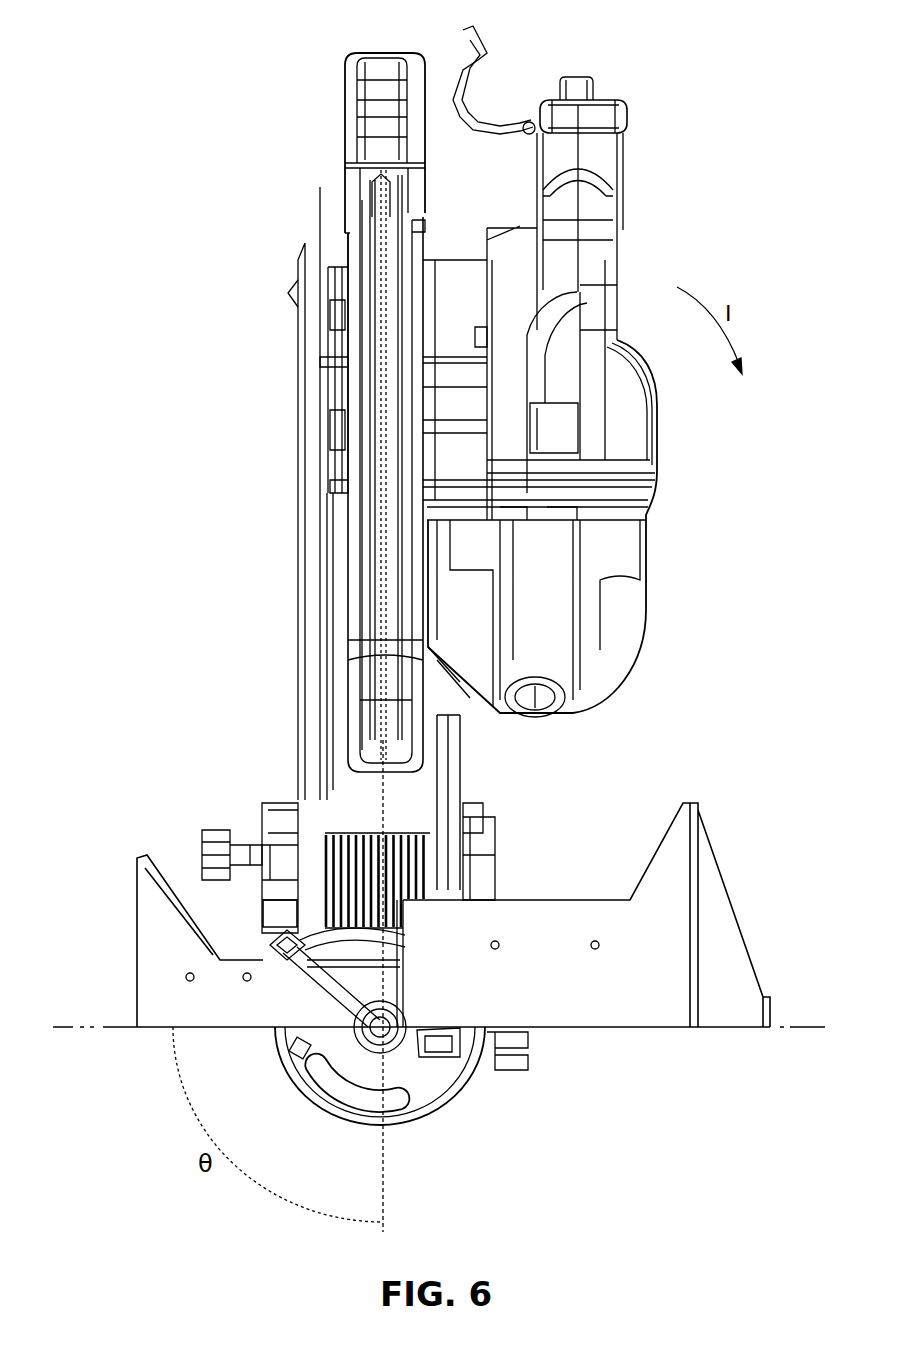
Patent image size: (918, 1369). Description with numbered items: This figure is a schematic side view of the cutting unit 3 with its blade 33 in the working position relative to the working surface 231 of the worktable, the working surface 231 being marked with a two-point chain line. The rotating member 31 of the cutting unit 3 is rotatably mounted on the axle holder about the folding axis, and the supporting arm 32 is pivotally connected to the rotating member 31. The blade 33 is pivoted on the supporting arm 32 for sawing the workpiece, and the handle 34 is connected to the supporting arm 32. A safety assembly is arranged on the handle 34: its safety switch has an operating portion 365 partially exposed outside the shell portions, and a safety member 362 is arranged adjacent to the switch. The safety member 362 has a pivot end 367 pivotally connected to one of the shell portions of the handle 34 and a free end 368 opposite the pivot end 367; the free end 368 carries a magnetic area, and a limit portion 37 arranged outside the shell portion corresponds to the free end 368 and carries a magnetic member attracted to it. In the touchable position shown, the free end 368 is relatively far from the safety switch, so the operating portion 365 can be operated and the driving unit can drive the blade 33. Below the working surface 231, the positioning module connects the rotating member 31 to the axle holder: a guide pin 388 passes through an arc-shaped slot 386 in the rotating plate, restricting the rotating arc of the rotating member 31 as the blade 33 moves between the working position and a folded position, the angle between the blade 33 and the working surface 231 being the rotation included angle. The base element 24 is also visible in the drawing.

The cutting unit 3 is at (268, 145).
The safety member 362 is at (457, 66).
The free end 368 is at (483, 33).
The operating portion 365 is at (594, 82).
The limit portion 37 is at (632, 116).
The pivot end 367 is at (525, 138).
The handle 34 is at (587, 248).
The blade 33 is at (330, 659).
The supporting arm 32 is at (462, 766).
The rotating member 31 is at (499, 857).
The base plate 24 is at (697, 893).
The working surface 231 is at (73, 1027).
The arc-shaped slot 386 is at (341, 1100).
The guide pin 388 is at (291, 1088).